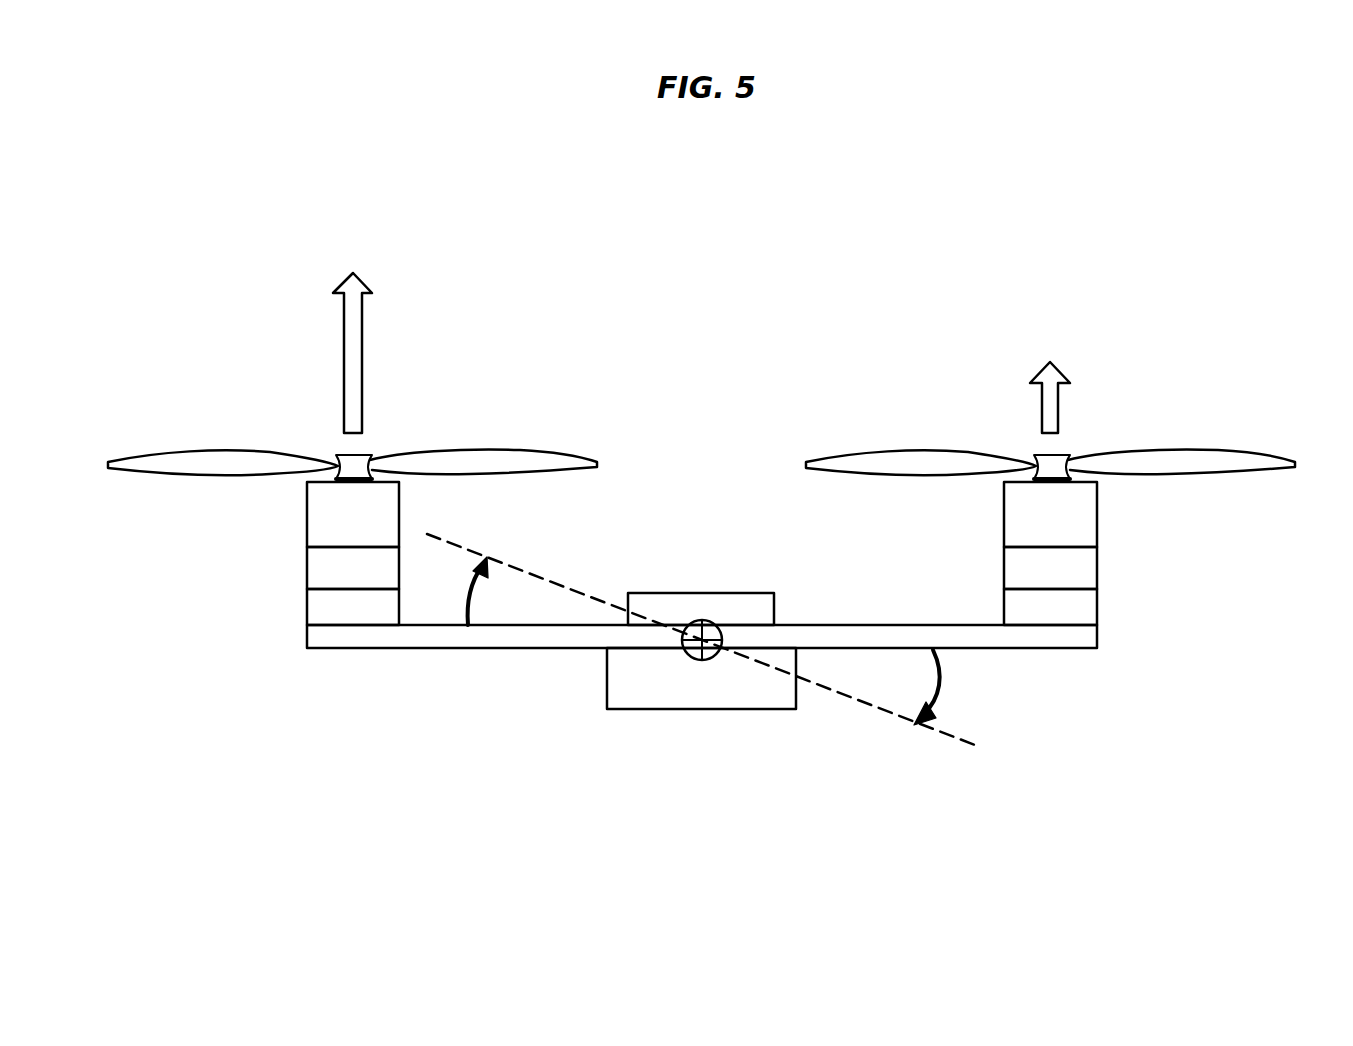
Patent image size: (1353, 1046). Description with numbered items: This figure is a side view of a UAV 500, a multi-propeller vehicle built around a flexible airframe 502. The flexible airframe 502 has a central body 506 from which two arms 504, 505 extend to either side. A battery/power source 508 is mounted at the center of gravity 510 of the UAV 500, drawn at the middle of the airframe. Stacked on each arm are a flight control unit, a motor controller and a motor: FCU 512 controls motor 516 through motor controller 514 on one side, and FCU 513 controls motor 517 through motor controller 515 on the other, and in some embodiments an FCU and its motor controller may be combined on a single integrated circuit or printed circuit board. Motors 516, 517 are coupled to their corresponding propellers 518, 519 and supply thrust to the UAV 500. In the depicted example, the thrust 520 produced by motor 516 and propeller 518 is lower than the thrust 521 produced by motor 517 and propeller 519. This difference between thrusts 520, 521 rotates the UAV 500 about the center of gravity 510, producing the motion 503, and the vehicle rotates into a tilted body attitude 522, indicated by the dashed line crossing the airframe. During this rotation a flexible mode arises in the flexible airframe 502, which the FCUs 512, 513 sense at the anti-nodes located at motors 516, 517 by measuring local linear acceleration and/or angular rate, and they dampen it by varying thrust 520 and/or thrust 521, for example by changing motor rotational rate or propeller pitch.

The UAV 500 is at (872, 208).
The flexible airframe 502 is at (510, 640).
The motion 503 is at (975, 693).
The arm 504 is at (877, 610).
The arm 505 is at (420, 658).
The central body 506 is at (774, 562).
The battery/power source 508 is at (762, 702).
The center of gravity 510 is at (697, 658).
The Flight Control Unit 512 is at (1087, 607).
The Flight Control Unit 513 is at (305, 608).
The motor controller 514 is at (1087, 570).
The motor controller 515 is at (305, 571).
The motor 516 is at (1087, 517).
The motor 517 is at (305, 518).
The propeller 518 is at (1226, 452).
The propeller 519 is at (246, 450).
The thrust 520 is at (1058, 393).
The thrust 521 is at (405, 355).
The body attitude 522 is at (950, 740).